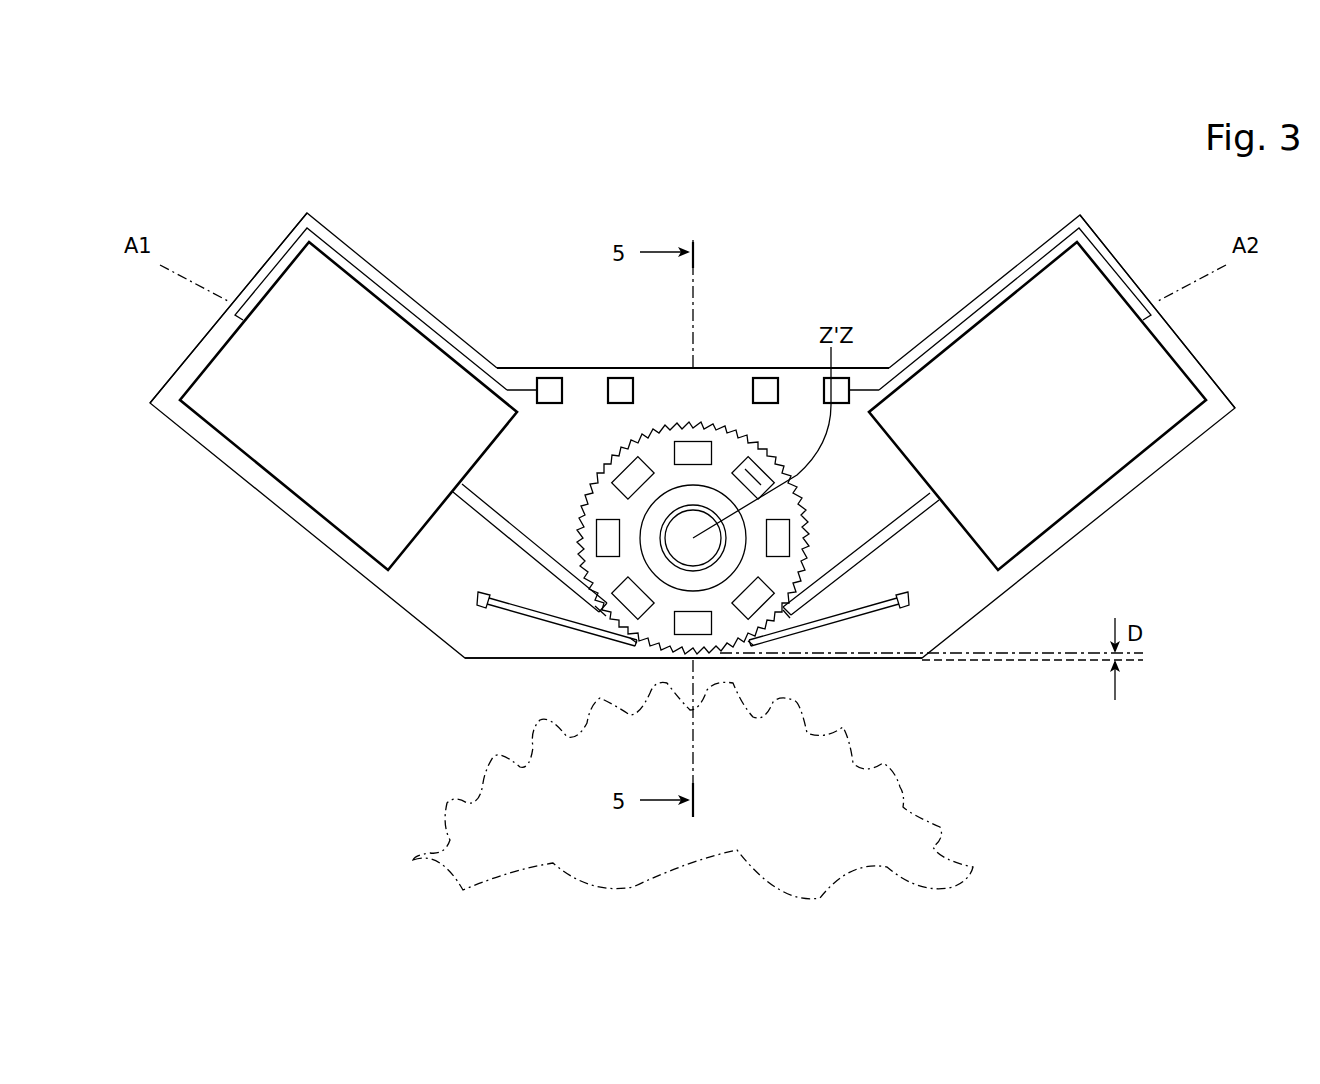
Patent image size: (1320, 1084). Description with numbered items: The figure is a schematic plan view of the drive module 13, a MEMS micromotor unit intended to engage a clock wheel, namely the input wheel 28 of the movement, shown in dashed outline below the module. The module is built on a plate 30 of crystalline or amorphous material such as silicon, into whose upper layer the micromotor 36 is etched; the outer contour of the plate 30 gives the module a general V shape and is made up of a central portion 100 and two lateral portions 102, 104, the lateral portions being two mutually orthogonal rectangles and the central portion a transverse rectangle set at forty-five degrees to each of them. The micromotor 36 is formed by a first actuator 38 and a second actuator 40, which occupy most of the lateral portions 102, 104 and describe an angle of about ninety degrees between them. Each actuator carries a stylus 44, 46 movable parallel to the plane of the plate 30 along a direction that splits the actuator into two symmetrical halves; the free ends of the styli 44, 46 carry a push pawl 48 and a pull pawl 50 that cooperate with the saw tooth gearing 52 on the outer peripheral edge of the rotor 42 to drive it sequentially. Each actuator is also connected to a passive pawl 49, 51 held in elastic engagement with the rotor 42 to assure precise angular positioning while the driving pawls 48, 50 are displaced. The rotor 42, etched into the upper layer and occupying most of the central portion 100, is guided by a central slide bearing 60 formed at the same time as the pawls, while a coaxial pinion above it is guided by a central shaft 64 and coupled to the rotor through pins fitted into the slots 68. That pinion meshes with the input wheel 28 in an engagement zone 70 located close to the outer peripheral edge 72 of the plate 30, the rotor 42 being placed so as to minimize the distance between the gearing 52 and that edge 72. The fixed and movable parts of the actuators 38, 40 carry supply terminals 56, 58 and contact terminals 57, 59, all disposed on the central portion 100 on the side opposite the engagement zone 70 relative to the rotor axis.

The drive module 13 is at (565, 262).
The input wheel 28 is at (949, 822).
The plate 30 is at (430, 638).
The micromotor 36 is at (467, 683).
The first actuator 38 is at (295, 480).
The second actuator 40 is at (1157, 413).
The rotor 42 is at (714, 422).
The stylus 44 is at (473, 510).
The stylus 46 is at (912, 513).
The push pawl 48 is at (588, 617).
The passive pawl 49 is at (624, 640).
The pull pawl 50 is at (790, 612).
The passive pawl 51 is at (750, 645).
The saw tooth gearing 52 is at (613, 457).
The supply terminal 56 is at (549, 380).
The contact terminal 57 is at (620, 380).
The supply terminal 58 is at (843, 380).
The contact terminal 59 is at (757, 380).
The slide bearing 60 is at (793, 467).
The central shaft 64 is at (677, 538).
The slots 68 is at (693, 450).
The engagement zone 70 is at (682, 677).
The outer peripheral edge 72 is at (893, 660).
The central portion 100 is at (885, 364).
The lateral portion 102 is at (392, 276).
The lateral portion 104 is at (1039, 243).